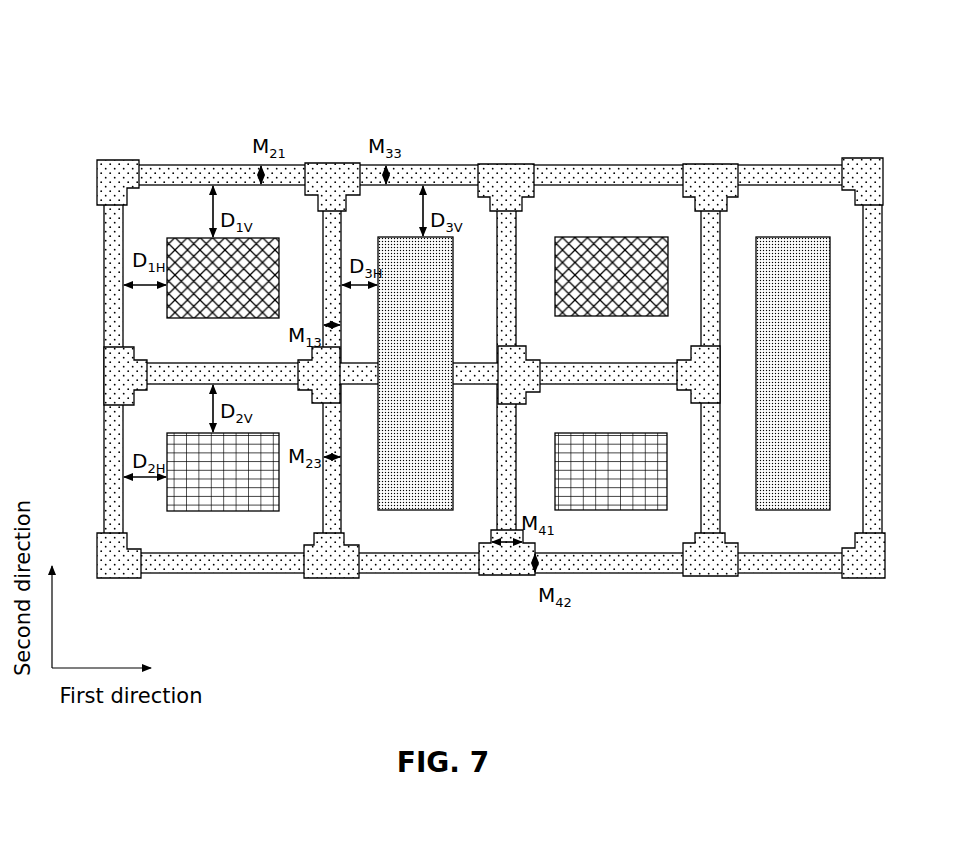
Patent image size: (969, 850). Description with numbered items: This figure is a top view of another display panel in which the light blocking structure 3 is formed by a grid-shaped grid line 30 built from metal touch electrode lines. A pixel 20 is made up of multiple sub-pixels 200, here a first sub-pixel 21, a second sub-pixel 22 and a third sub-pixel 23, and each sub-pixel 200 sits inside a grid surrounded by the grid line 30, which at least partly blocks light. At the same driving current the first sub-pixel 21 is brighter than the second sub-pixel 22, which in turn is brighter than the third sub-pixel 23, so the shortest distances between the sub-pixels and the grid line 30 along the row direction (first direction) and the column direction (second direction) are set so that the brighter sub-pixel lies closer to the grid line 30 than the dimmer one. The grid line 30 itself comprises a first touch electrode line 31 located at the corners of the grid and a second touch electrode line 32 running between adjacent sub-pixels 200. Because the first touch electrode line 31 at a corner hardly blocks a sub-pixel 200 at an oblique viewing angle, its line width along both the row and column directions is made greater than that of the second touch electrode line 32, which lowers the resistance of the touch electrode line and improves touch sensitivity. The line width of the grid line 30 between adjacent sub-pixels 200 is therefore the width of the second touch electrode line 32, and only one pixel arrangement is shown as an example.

The light blocking structure 3 is at (517, 160).
The pixel 20 is at (711, 277).
The first sub-pixel 21 is at (600, 247).
The second sub-pixel 22 is at (642, 437).
The third sub-pixel 23 is at (793, 303).
The grid line 30 is at (491, 290).
The first touch electrode line 31 is at (122, 165).
The second touch electrode line 32 is at (180, 167).
The sub-pixel 200 is at (811, 284).